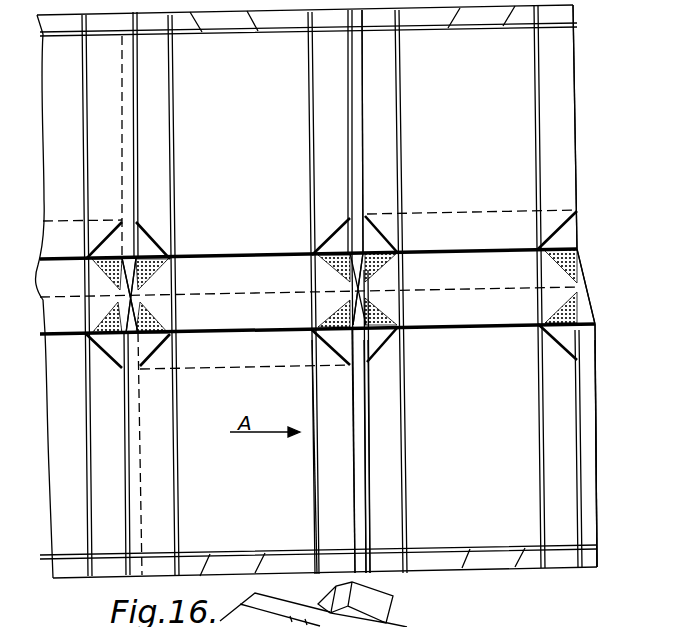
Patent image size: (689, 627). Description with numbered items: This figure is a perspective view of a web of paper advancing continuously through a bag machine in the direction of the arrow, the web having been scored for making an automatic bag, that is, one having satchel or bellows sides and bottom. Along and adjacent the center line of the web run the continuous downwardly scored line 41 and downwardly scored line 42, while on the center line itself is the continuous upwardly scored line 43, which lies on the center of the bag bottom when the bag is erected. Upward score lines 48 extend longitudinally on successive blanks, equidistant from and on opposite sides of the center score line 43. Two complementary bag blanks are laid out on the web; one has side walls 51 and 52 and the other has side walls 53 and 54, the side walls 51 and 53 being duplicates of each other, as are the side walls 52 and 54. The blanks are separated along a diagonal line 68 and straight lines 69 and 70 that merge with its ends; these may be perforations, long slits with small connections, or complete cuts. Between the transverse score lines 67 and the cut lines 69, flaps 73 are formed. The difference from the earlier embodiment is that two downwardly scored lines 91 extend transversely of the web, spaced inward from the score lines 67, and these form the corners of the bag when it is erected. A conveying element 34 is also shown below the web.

The conveyor bar 34 is at (390, 614).
The downwardly scored line 41 is at (240, 253).
The downwardly scored line 42 is at (214, 333).
The upwardly scored line 43 is at (202, 292).
The upward score lines 48 is at (455, 212).
The side wall 51 is at (470, 135).
The side wall 52 is at (470, 435).
The side wall 53 is at (175, 445).
The side wall 54 is at (175, 145).
The score lines 67 is at (368, 510).
The diagonal line 68 is at (360, 279).
The straight line 69 is at (354, 495).
The straight line 70 is at (363, 140).
The flaps 73 is at (366, 452).
The downwardly scored lines 91 is at (175, 122).